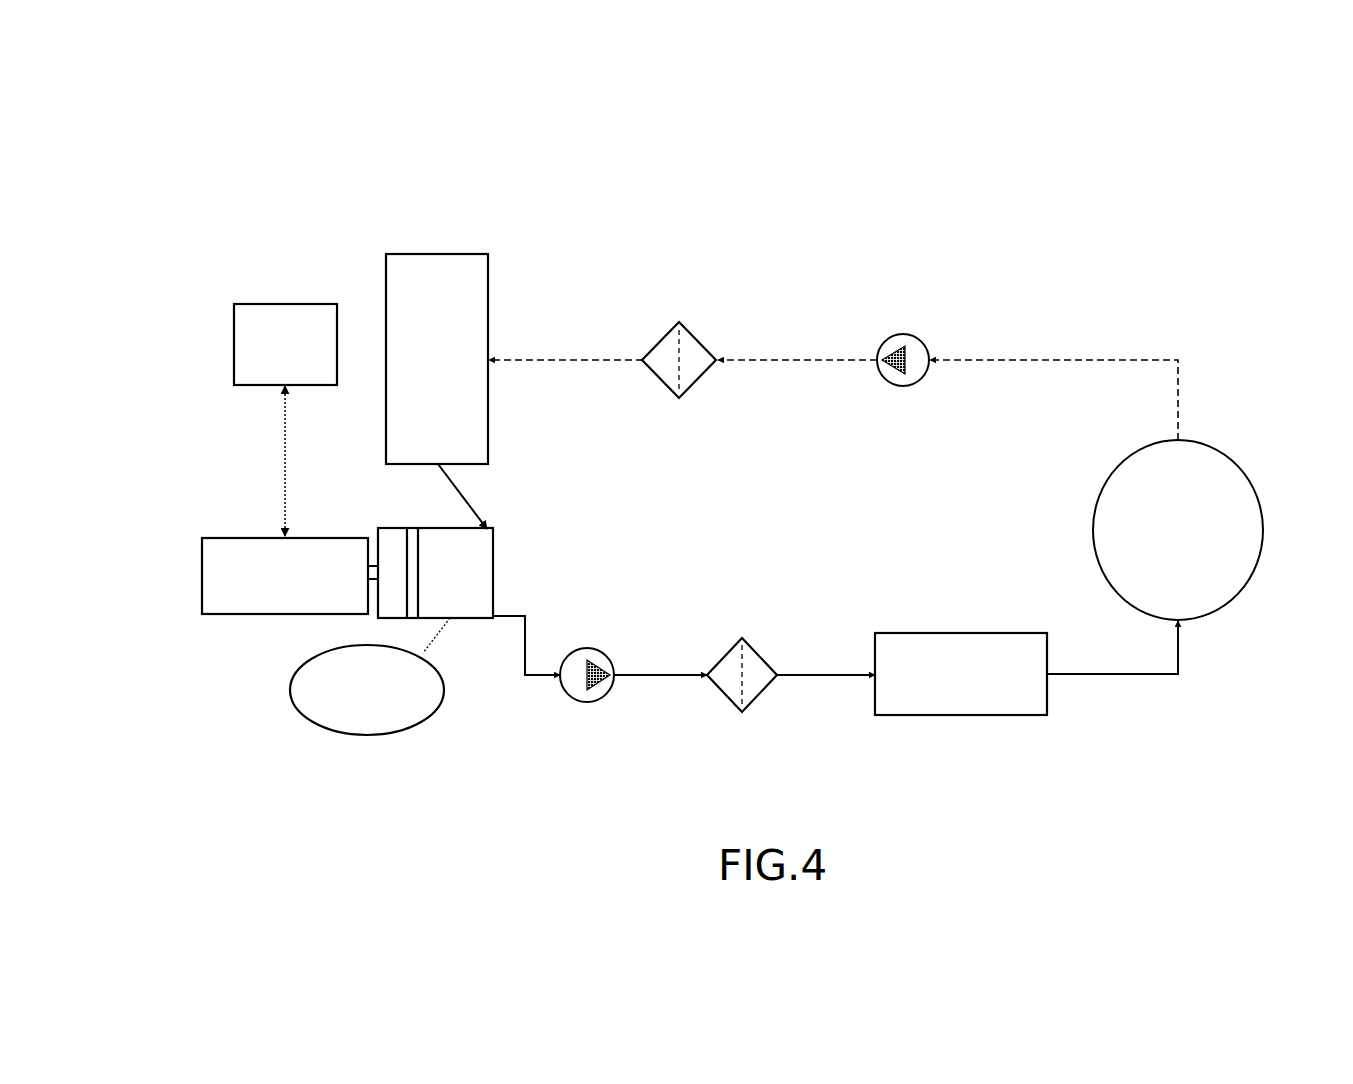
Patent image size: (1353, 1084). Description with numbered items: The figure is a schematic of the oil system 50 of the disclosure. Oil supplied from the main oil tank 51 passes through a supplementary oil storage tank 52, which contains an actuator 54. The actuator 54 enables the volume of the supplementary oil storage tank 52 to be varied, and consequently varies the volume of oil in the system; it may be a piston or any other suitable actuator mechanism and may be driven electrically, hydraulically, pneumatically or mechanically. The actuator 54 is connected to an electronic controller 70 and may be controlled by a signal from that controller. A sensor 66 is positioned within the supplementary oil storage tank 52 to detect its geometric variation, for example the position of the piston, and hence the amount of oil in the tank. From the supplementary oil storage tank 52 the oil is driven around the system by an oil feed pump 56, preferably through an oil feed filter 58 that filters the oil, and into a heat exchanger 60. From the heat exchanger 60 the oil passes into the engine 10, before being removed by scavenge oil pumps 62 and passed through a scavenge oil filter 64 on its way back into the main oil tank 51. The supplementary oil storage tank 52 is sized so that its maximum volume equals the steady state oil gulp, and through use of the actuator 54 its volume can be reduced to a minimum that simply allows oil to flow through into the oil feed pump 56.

The engine 10 is at (1181, 536).
The oil system 50 is at (1041, 197).
The main oil tank 51 is at (418, 306).
The supplementary oil storage tank 52 is at (467, 566).
The actuator 54 is at (266, 590).
The oil feed pump 56 is at (575, 682).
The oil feed filter 58 is at (733, 681).
The heat exchanger 60 is at (984, 670).
The scavenge oil pumps 62 is at (912, 358).
The scavenge oil filter 64 is at (692, 362).
The sensor 66 is at (326, 683).
The electronic controller 70 is at (289, 334).